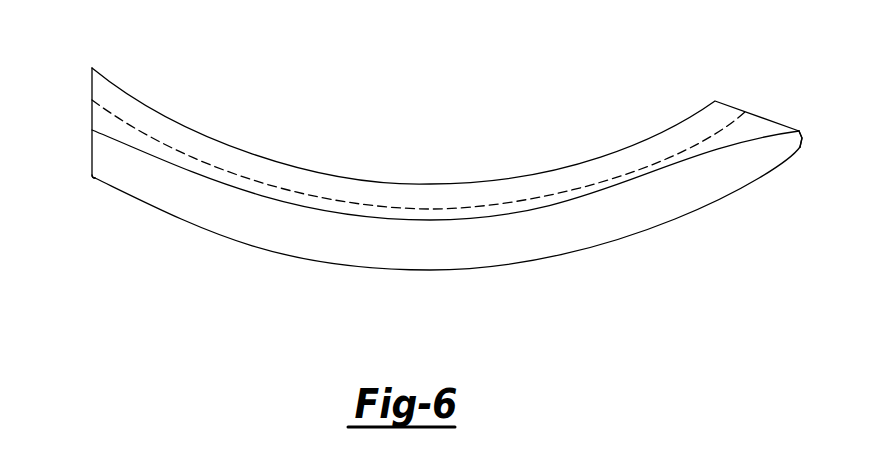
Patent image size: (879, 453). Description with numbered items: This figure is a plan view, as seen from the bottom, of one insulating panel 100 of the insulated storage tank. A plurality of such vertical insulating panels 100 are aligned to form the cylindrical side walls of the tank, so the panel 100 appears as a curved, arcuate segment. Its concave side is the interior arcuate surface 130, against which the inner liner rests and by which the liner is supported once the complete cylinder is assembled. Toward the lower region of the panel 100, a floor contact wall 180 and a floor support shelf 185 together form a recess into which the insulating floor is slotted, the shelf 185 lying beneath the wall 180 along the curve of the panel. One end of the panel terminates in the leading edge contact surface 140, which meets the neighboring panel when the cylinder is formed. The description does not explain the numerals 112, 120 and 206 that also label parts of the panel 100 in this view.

The insulating panel 100 is at (415, 208).
The beam body 112 is at (560, 240).
The lower edge / front wall 120 is at (462, 270).
The interior arcuate surface 130 is at (470, 182).
The leading edge contact surface 140 is at (759, 116).
The floor contact wall 180 is at (357, 218).
The floor support shelf 185 is at (372, 195).
The end wall 206 is at (90, 118).